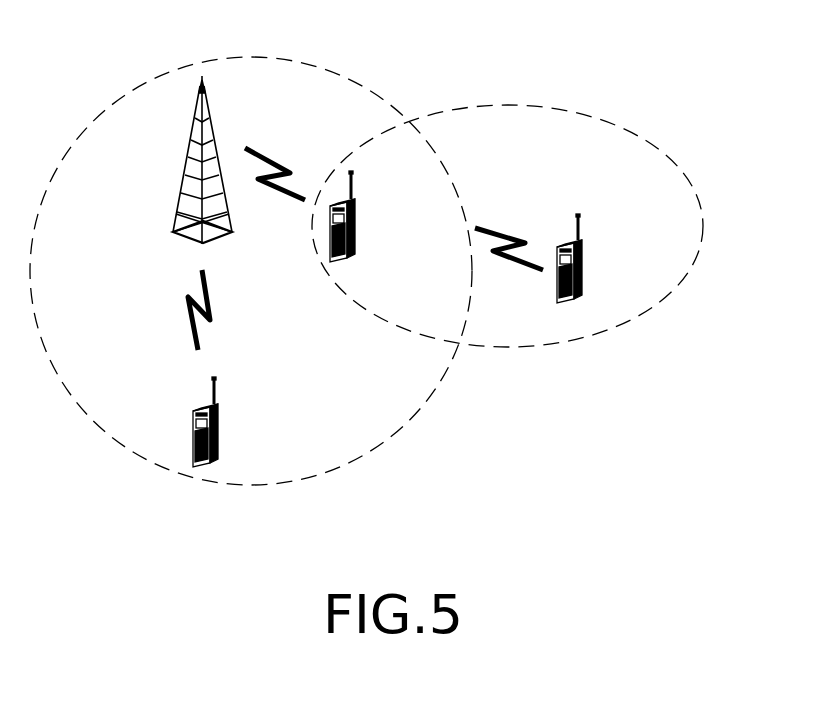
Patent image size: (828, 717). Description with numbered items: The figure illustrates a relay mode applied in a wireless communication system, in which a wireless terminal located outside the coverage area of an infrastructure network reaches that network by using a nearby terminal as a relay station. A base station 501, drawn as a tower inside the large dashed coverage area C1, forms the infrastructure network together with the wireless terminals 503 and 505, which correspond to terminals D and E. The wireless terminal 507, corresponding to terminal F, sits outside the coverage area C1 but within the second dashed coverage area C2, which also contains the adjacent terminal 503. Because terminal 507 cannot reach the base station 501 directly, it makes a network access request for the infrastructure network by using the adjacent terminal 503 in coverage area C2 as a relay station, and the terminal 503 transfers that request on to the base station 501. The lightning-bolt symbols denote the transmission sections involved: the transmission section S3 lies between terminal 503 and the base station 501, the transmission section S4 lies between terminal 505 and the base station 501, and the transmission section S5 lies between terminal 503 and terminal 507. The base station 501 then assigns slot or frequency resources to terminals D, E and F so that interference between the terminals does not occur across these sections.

The coverage area of the IS network C1 is at (250, 56).
The coverage area of the adjacent terminal C2 is at (506, 104).
The base station 501 is at (185, 168).
The wireless terminal 503 is at (357, 229).
The wireless terminal 505 is at (218, 440).
The wireless terminal 507 is at (582, 269).
The transmission section S3 is at (281, 192).
The transmission section S4 is at (190, 322).
The transmission section S5 is at (518, 263).